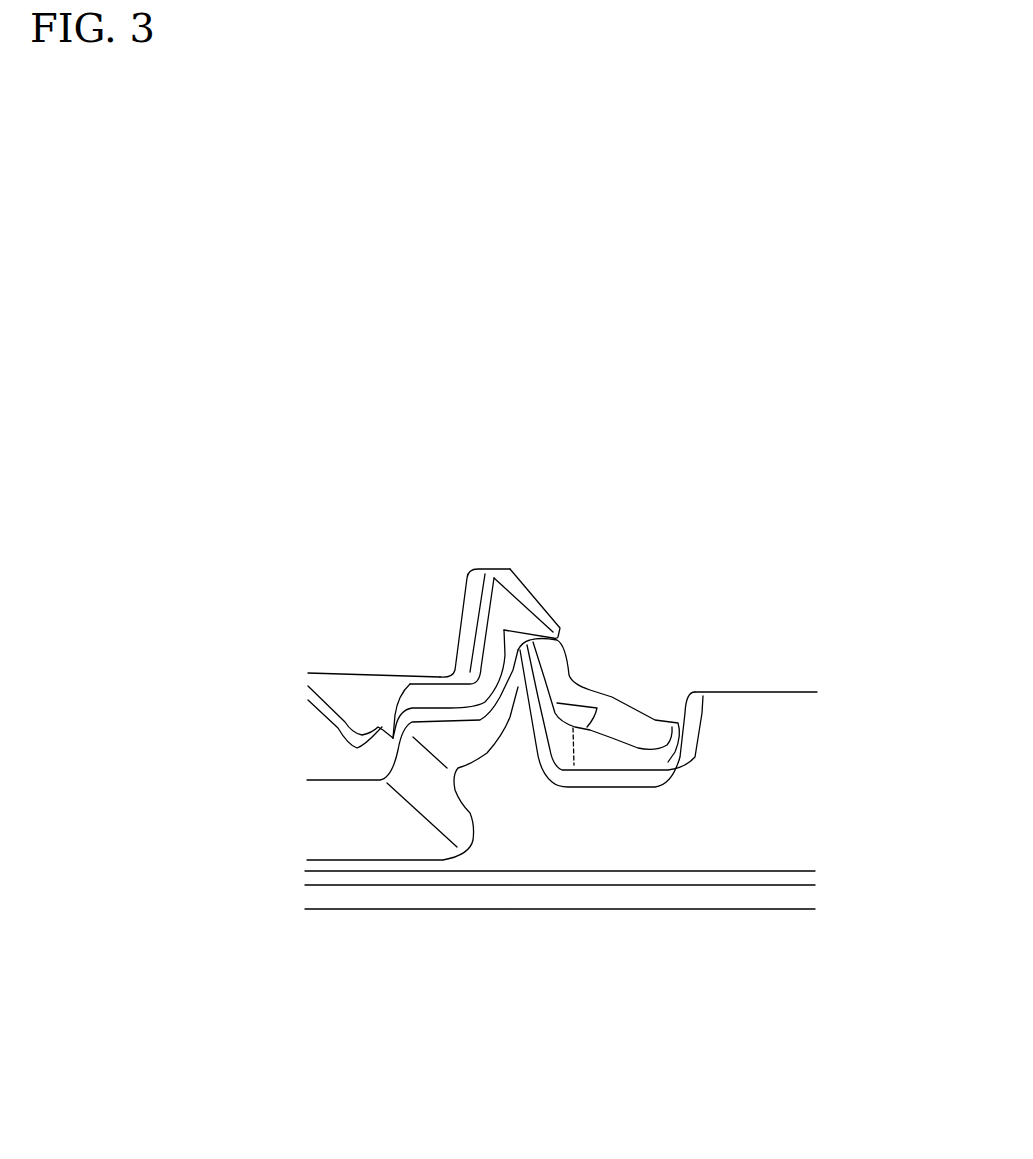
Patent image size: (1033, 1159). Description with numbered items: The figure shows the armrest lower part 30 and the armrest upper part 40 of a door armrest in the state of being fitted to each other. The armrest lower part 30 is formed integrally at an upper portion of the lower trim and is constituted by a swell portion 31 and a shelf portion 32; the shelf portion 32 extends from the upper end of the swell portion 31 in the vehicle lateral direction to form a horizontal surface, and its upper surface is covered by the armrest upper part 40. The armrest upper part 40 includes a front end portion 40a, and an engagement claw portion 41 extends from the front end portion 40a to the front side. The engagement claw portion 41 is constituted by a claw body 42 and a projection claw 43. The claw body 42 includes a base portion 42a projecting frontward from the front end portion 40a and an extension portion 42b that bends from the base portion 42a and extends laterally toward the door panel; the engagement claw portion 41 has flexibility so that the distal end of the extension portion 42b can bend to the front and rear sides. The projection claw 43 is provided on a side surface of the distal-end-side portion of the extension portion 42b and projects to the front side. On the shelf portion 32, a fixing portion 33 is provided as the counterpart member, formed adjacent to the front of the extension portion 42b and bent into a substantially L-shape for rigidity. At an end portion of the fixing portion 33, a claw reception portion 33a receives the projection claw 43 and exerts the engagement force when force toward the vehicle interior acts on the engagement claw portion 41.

The armrest lower part 30 is at (772, 617).
The swell portion 31 is at (683, 897).
The shelf portion 32 is at (763, 807).
The fixing portion 33 is at (572, 798).
The claw reception portion 33a is at (562, 640).
The armrest upper part 40 is at (338, 830).
The front end portion 40a is at (335, 735).
The engagement claw portion 41 is at (452, 537).
The claw body 42 is at (390, 624).
The base portion 42a is at (415, 693).
The extension portion 42b is at (468, 603).
The projection claw 43 is at (515, 597).